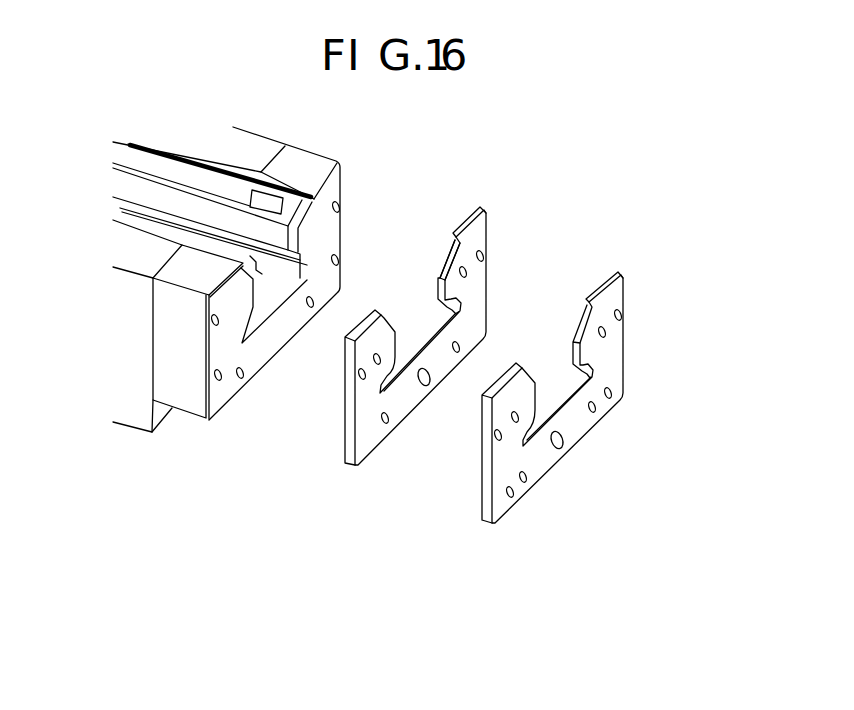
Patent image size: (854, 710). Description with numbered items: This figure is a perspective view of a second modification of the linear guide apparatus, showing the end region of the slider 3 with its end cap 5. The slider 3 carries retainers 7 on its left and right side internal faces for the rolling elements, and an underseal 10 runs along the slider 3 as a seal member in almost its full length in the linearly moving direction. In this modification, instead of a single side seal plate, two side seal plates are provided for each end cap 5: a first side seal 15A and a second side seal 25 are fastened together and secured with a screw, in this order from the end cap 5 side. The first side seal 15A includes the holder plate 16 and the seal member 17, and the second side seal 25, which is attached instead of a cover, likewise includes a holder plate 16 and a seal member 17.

The slider 3 is at (132, 426).
The end cap 5 is at (190, 405).
The retainer 7 is at (280, 239).
The underseal 10 is at (318, 198).
The first side seal 15A is at (503, 270).
The holder plate 16 is at (365, 435).
The seal member 17 is at (446, 261).
The second side seal 25 is at (481, 522).